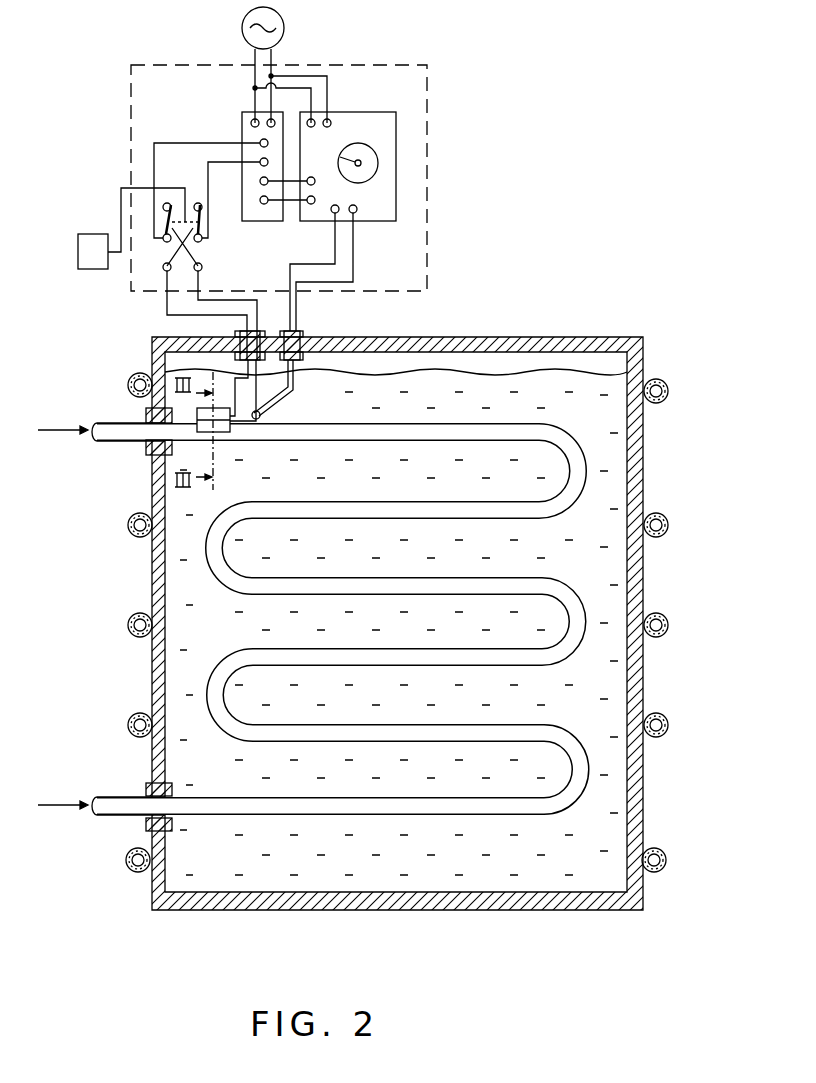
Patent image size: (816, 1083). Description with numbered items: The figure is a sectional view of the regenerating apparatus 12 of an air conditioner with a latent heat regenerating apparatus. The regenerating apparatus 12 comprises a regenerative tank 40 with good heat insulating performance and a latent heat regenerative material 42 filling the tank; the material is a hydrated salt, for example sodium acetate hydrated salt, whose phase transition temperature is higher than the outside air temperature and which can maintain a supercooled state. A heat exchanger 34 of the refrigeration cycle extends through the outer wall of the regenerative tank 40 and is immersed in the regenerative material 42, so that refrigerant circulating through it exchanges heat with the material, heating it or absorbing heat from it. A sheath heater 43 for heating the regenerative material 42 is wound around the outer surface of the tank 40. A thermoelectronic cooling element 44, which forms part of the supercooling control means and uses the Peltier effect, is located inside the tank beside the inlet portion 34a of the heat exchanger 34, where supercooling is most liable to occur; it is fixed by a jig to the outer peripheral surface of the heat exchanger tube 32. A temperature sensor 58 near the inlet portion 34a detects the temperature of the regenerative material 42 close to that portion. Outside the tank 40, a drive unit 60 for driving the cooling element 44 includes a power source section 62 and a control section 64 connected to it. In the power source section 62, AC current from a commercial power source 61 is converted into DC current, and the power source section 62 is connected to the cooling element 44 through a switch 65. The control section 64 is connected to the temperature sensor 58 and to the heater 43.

The regenerating apparatus 12 is at (550, 234).
The heat exchanger tube 32 is at (222, 664).
The heat exchanger 34 is at (396, 814).
The inlet portion 34a is at (255, 442).
The regenerative tank 40 is at (645, 452).
The latent heat regenerative material 42 is at (607, 558).
The sheath heater 43 is at (659, 638).
The thermoelectronic cooling element 44 is at (150, 412).
The temperature sensor 58 is at (262, 417).
The drive unit 60 is at (428, 100).
The commercial power source 61 is at (285, 28).
The power source section 62 is at (241, 118).
The control section 64 is at (370, 112).
The switch 65 is at (96, 234).